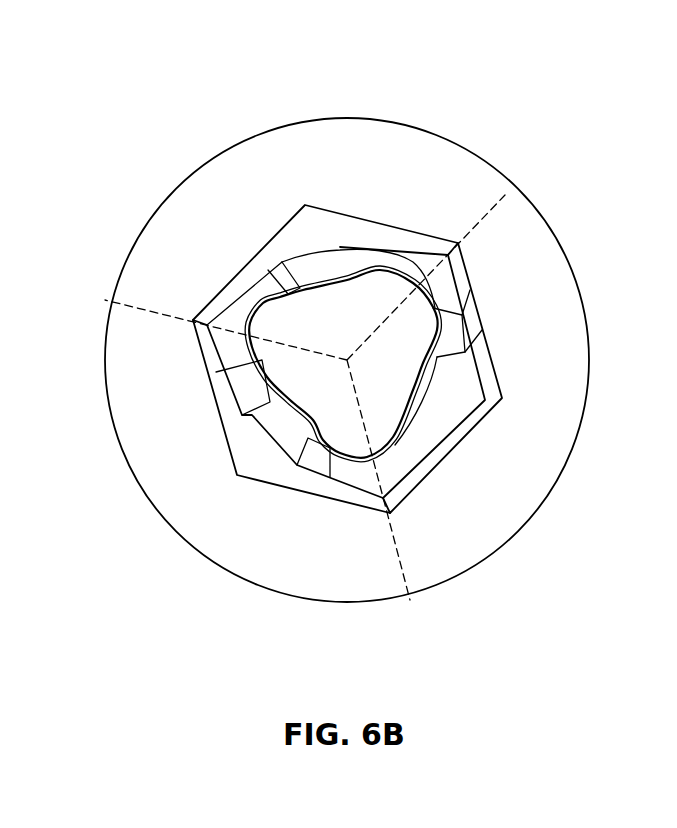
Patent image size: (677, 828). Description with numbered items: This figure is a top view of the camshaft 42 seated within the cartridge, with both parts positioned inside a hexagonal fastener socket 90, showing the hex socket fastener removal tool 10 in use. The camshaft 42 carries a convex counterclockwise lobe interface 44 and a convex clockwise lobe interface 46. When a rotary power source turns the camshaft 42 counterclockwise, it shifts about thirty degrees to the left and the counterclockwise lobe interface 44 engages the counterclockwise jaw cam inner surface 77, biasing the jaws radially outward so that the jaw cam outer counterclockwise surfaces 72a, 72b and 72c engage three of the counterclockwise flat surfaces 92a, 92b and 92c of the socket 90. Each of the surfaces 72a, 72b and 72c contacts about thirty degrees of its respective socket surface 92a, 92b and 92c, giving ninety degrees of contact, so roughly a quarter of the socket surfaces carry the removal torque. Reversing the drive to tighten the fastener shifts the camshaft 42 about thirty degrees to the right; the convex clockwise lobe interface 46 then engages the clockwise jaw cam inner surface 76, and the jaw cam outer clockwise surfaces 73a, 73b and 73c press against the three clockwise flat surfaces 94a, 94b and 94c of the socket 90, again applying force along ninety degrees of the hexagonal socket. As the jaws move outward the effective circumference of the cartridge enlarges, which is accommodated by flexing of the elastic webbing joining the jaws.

The stent graft assembly 10 is at (140, 105).
The camshaft 42 is at (308, 397).
The convex counterclockwise lobe interface 44 is at (332, 213).
The convex clockwise lobe interface 46 is at (488, 310).
The jaw cam outer counterclockwise surface 72a is at (432, 240).
The jaw cam outer counterclockwise surface 72b is at (398, 515).
The jaw cam outer counterclockwise surface 72c is at (225, 372).
The jaw cam outer clockwise surface 73a is at (458, 312).
The jaw cam outer clockwise surface 73b is at (352, 488).
The jaw cam outer clockwise surface 73c is at (275, 258).
The clockwise jaw cam inner surface 76 is at (470, 300).
The counterclockwise jaw cam inner surface 77 is at (400, 245).
The fastener socket 90 is at (125, 328).
The counterclockwise flat surface of the hexagonal socket 92a is at (330, 208).
The counterclockwise flat surface of the hexagonal socket 92b is at (480, 425).
The counterclockwise flat surface of the hexagonal socket 92c is at (202, 352).
The clockwise flat surface of the hexagonal socket 94a is at (495, 338).
The clockwise flat surface of the hexagonal socket 94b is at (275, 480).
The clockwise flat surface of the hexagonal socket 94c is at (242, 275).